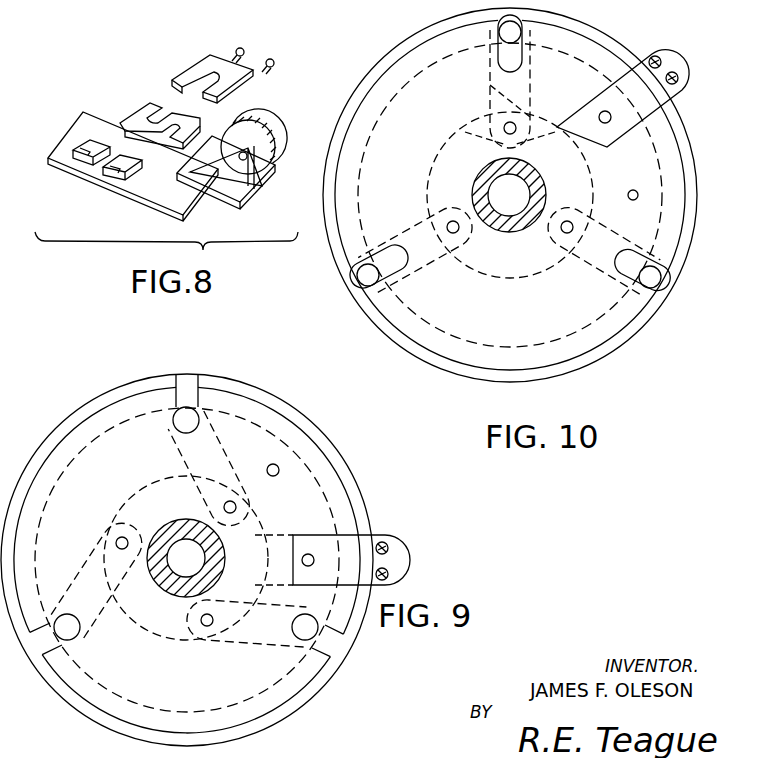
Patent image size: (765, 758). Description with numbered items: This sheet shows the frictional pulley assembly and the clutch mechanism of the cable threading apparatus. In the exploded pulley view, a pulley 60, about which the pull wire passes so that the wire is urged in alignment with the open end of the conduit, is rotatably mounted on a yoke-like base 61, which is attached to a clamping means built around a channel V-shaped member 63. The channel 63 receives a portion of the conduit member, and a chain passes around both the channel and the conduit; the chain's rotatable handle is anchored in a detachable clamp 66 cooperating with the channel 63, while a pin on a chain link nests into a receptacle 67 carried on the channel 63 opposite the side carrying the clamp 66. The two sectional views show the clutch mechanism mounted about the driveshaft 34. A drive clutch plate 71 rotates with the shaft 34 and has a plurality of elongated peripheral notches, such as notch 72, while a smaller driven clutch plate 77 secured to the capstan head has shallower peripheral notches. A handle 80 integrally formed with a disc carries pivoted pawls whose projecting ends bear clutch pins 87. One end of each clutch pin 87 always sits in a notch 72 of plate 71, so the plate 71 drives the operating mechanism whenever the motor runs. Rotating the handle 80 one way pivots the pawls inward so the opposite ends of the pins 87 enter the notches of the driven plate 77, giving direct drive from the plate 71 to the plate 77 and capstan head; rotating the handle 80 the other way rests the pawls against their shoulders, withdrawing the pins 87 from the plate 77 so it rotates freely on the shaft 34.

In FIG. 10, the driveshaft 34 is at (486, 186).
In FIG. 9, the driveshaft 34 is at (180, 522).
In FIG. 8, the pulley 60 is at (282, 122).
In FIG. 8, the yoke-like base 61 is at (246, 184).
In FIG. 8, the channel V-shaped member 63 is at (72, 129).
In FIG. 8, the detachable clamp 66 is at (245, 70).
In FIG. 8, the receptacle 67 is at (78, 165).
In FIG. 10, the drive clutch plate 71 is at (632, 328).
In FIG. 9, the drive clutch plate 71 is at (305, 692).
In FIG. 9, the notch 72 is at (330, 652).
In FIG. 10, the driven clutch plate 77 is at (666, 183).
In FIG. 9, the driven clutch plate 77 is at (358, 463).
In FIG. 10, the handle 80 is at (643, 51).
In FIG. 9, the handle 80 is at (410, 549).
In FIG. 10, the clutch pin 87 is at (661, 281).
In FIG. 9, the clutch pin 87 is at (188, 412).